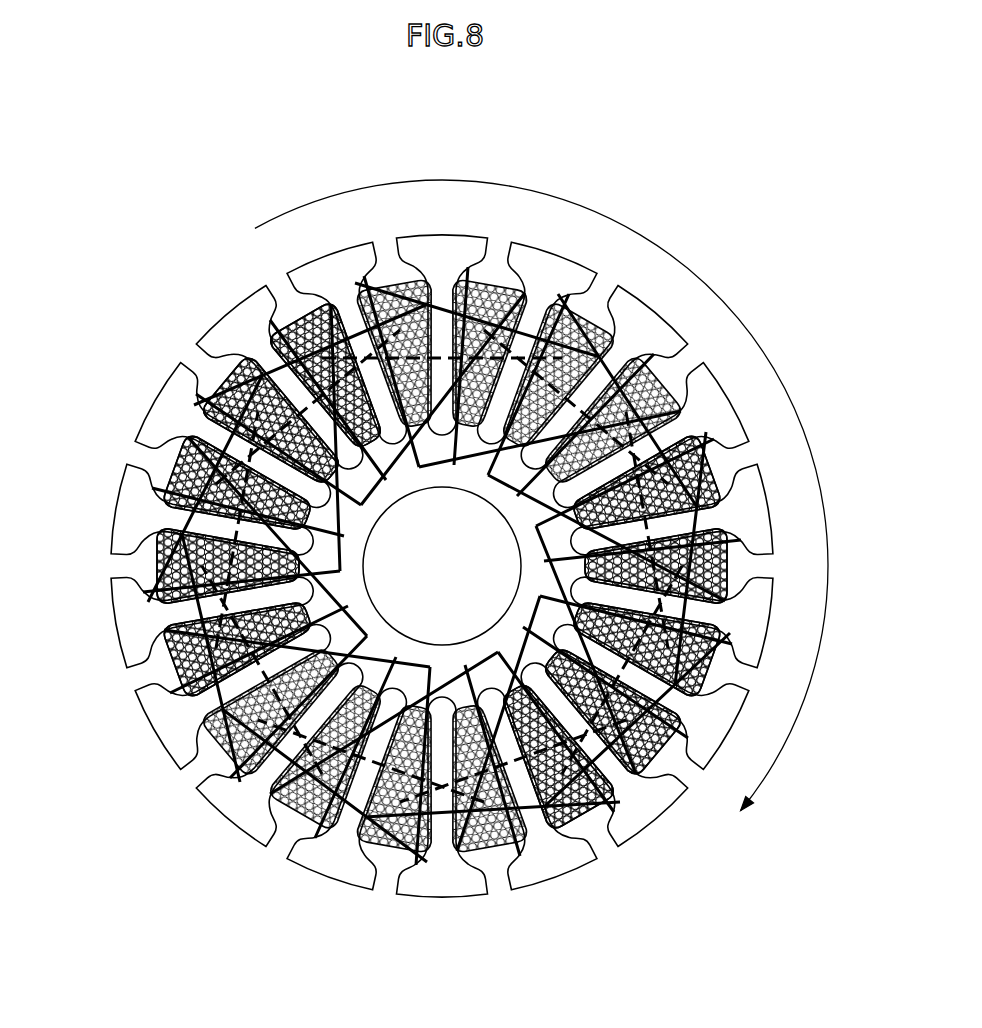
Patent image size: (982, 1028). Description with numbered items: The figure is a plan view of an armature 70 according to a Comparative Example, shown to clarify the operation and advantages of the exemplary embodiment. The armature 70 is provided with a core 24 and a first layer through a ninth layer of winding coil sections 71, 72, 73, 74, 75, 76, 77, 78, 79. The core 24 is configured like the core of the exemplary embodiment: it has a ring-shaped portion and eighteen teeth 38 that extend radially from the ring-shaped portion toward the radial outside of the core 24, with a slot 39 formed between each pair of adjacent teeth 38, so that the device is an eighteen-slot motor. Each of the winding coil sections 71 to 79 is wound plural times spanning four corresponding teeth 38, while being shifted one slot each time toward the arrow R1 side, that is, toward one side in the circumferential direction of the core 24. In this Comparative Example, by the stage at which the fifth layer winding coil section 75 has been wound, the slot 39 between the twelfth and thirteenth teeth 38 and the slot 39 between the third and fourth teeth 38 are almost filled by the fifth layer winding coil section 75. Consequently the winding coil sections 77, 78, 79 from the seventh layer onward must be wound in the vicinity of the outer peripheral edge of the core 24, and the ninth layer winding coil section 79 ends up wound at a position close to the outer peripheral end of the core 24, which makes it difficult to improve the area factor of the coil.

The core 24 is at (433, 234).
The teeth 38 is at (428, 566).
The slot 39 is at (439, 565).
The armature 70 is at (577, 128).
The 1st layer winding coil section 71 is at (439, 572).
The 2nd layer winding coil section 72 is at (405, 570).
The 3rd layer winding coil section 73 is at (568, 561).
The 4th layer winding coil section 74 is at (444, 572).
The 5th layer winding coil section 75 is at (434, 564).
The 6th layer winding coil section 76 is at (428, 595).
The 7th layer winding coil section 77 is at (449, 565).
The 8th layer winding coil section 78 is at (467, 535).
The 9th layer winding coil section 79 is at (474, 553).
The arrow R1 is at (541, 495).